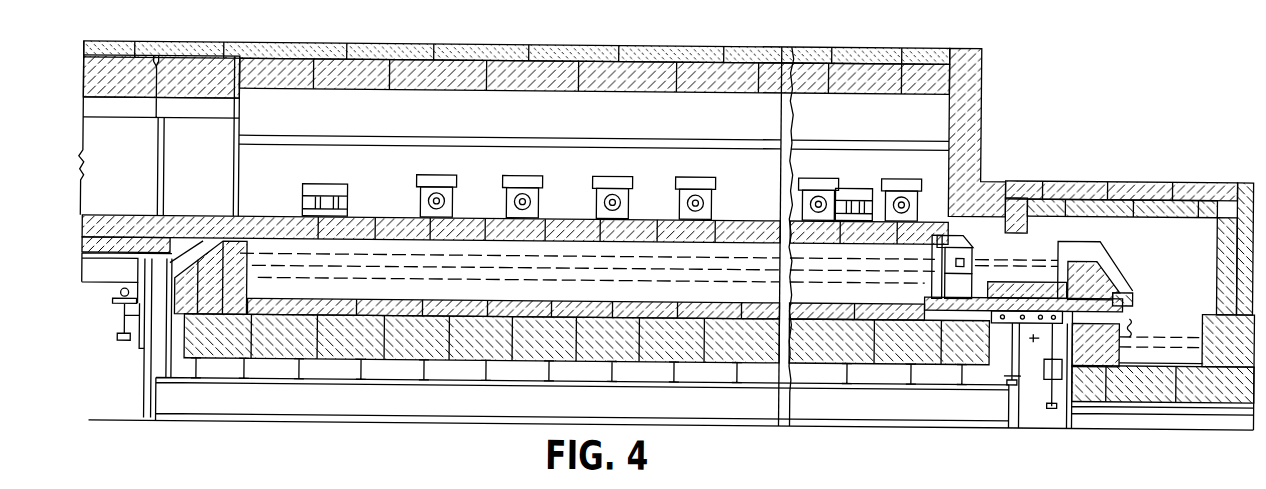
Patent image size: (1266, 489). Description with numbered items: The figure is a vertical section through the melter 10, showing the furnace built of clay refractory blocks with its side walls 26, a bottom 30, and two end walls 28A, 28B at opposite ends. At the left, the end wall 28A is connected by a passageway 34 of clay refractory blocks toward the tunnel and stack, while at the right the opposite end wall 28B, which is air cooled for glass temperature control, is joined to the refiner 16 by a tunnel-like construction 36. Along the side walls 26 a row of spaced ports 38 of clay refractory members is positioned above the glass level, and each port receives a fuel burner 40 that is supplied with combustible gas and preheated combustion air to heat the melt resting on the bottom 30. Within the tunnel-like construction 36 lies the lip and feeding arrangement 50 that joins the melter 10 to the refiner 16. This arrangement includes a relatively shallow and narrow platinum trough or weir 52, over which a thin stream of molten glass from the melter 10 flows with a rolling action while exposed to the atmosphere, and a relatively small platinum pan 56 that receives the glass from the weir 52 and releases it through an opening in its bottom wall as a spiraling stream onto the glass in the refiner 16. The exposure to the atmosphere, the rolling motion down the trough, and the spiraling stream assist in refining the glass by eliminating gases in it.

The melter 10 is at (489, 36).
The passageway 34 is at (86, 69).
The side walls 26 is at (382, 182).
The ports 38 is at (442, 201).
The fuel burner 40 is at (602, 198).
The end wall 28A is at (247, 240).
The bottom 30 is at (457, 293).
The end wall 28B is at (928, 270).
The refiner 16 is at (1172, 419).
The tunnel-like construction 36 is at (992, 176).
The lip and feeding arrangement 50 is at (1181, 264).
The trough or weir 52 is at (1102, 242).
The pan 56 is at (1137, 296).